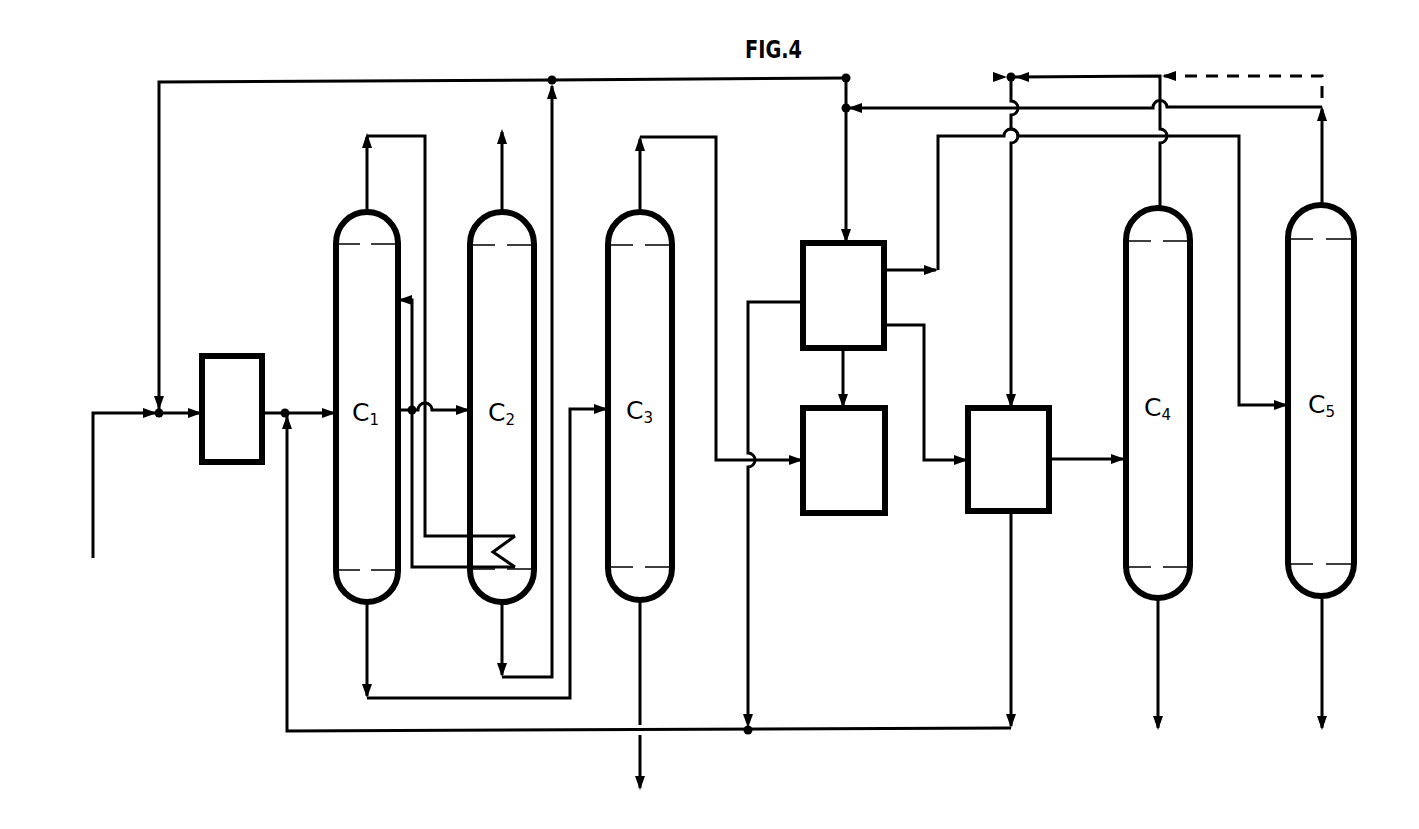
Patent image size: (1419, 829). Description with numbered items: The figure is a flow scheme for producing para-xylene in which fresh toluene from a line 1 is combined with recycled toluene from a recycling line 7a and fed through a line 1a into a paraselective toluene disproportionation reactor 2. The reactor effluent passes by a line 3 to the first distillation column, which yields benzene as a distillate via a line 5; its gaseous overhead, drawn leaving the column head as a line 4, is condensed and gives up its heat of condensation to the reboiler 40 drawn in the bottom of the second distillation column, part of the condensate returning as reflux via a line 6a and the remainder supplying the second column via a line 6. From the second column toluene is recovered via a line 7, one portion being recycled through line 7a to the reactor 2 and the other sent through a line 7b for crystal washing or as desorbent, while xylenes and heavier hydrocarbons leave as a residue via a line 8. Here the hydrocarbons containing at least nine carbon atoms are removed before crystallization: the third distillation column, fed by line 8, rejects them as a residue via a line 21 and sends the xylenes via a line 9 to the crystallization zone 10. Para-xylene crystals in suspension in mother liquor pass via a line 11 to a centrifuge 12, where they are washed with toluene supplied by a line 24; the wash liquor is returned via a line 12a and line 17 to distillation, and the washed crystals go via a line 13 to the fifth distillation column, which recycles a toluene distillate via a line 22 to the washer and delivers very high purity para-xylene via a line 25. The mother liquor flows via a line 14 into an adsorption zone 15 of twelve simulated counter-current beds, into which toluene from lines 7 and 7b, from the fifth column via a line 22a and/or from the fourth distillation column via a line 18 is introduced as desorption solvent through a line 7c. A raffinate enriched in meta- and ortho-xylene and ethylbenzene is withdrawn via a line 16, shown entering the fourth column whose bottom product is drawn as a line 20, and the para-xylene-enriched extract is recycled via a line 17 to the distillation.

The line 1 is at (93, 513).
The line 1a is at (178, 417).
The paraselective toluene disproportionation reactor 2 is at (242, 428).
The line 3 is at (268, 412).
The overhead line of column C1 4 is at (366, 170).
The line 5 is at (502, 160).
The line 6 is at (434, 379).
The line 6a is at (445, 569).
The line 7 is at (502, 662).
The recycling line 7a is at (159, 283).
The line 7b is at (793, 79).
The line 7c is at (1012, 190).
The line 8 is at (380, 698).
The line 9 is at (638, 165).
The crystallization zone 10 is at (862, 476).
The line 11 is at (843, 380).
The centrifuge 12 is at (862, 311).
The line 12a is at (749, 605).
The line 13 is at (940, 268).
The line 14 is at (927, 332).
The adsorption zone 15 is at (1026, 476).
The line 16 is at (1078, 461).
The line 17 is at (287, 522).
The line 18 is at (1160, 180).
The bottoms line of column C4 20 is at (1158, 665).
The line 21 is at (640, 780).
The line 22 is at (1323, 152).
The line 22a is at (1325, 78).
The line 24 is at (846, 160).
The line 25 is at (1322, 665).
The heat exchanger in column C2 40 is at (503, 562).